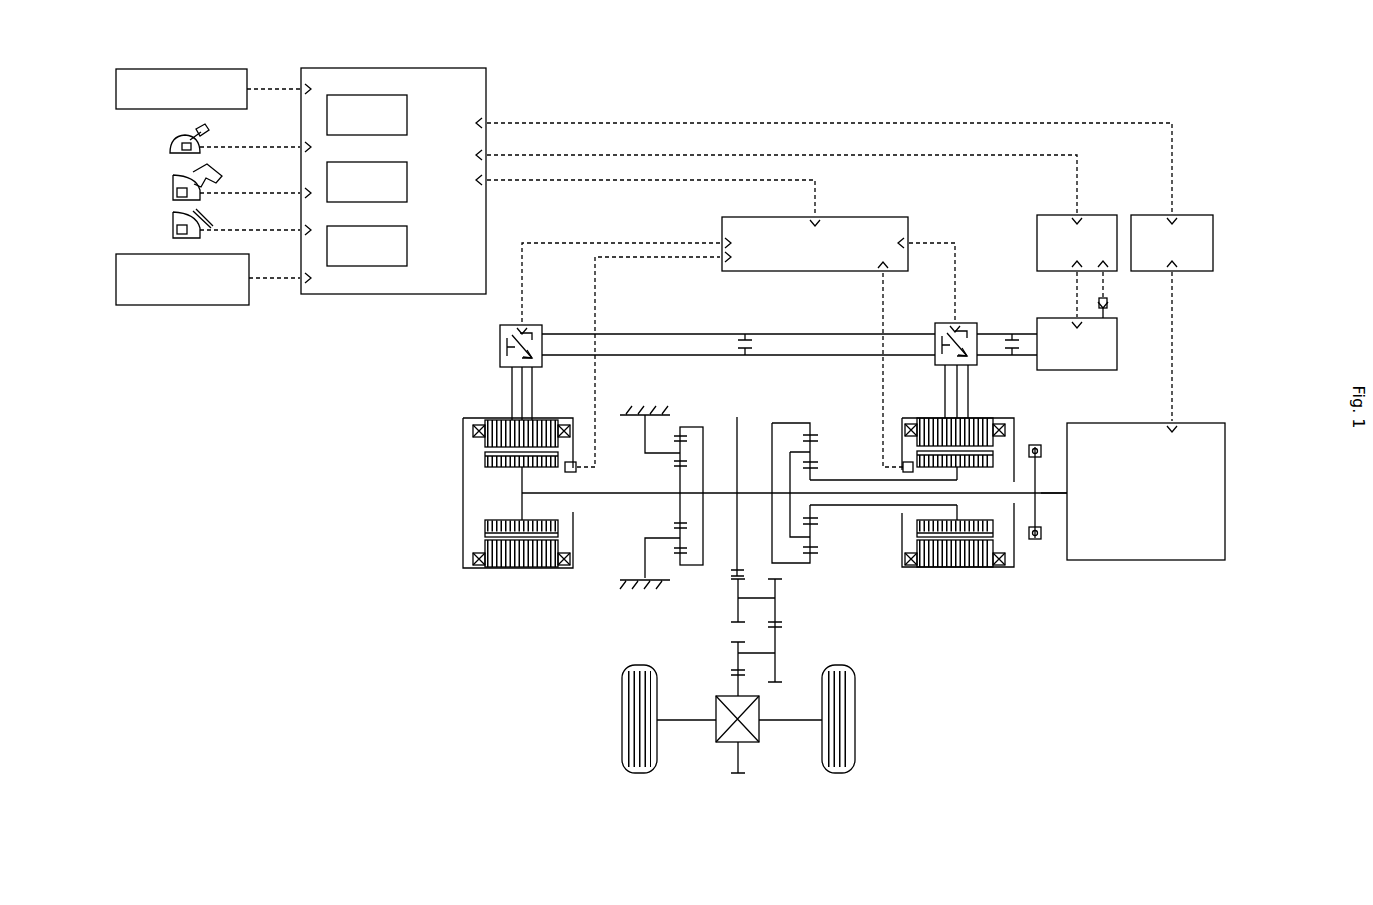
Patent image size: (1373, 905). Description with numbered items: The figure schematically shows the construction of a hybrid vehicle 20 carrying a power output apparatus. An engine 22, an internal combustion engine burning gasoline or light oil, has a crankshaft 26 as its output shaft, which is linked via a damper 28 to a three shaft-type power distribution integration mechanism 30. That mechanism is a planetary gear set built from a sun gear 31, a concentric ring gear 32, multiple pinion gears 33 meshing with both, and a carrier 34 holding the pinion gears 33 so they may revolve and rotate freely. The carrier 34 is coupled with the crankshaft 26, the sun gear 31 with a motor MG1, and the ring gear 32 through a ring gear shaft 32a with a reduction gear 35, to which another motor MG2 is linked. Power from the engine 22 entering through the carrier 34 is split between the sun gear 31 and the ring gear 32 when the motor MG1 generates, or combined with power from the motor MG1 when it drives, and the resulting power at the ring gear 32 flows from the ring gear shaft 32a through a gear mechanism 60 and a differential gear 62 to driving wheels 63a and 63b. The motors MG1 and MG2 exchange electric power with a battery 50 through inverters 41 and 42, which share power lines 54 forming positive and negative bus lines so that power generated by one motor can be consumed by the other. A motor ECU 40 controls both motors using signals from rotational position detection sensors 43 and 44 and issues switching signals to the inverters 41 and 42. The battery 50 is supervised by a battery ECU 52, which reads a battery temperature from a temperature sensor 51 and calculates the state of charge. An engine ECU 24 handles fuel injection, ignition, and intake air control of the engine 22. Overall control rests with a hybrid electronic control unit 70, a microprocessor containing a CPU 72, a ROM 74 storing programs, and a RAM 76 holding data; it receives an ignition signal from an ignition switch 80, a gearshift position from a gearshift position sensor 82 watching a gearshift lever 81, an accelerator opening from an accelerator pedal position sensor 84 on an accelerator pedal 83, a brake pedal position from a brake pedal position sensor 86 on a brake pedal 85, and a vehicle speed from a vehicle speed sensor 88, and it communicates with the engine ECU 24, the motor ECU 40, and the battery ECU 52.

The hybrid vehicle 20 is at (977, 94).
The engine 22 is at (1225, 457).
The engine ECU 24 is at (1189, 213).
The crankshaft 26 is at (1050, 494).
The damper 28 is at (1041, 540).
The power distribution integration mechanism 30 is at (864, 479).
The sun gear 31 is at (812, 507).
The ring gear 32 is at (812, 556).
The ring gear shaft 32a is at (718, 493).
The pinion gears 33 is at (812, 533).
The carrier 34 is at (788, 462).
The reduction gear 35 is at (684, 403).
The motor ECU 40 is at (853, 217).
The inverter 41 is at (972, 323).
The inverter 42 is at (528, 323).
The rotational position detection sensor 43 is at (905, 462).
The rotational position detection sensor 44 is at (571, 462).
The battery 50 is at (1080, 371).
The temperature sensor 51 is at (1108, 302).
The battery ECU 52 is at (1054, 215).
The power lines 54 is at (800, 352).
The gear mechanism 60 is at (815, 635).
The differential gear 62 is at (759, 731).
The driving wheel 63a is at (620, 752).
The driving wheel 63b is at (857, 752).
The hybrid electronic control unit 70 is at (396, 68).
The CPU 72 is at (407, 115).
The ROM 74 is at (407, 181).
The RAM 76 is at (407, 247).
The ignition switch 80 is at (116, 82).
The gearshift lever 81 is at (199, 131).
The gearshift position sensor 82 is at (182, 147).
The accelerator pedal 83 is at (200, 170).
The accelerator pedal position sensor 84 is at (177, 193).
The brake pedal 85 is at (195, 213).
The brake pedal position sensor 86 is at (177, 230).
The vehicle speed sensor 88 is at (116, 275).
The motor MG1 is at (958, 567).
The motor MG2 is at (497, 418).